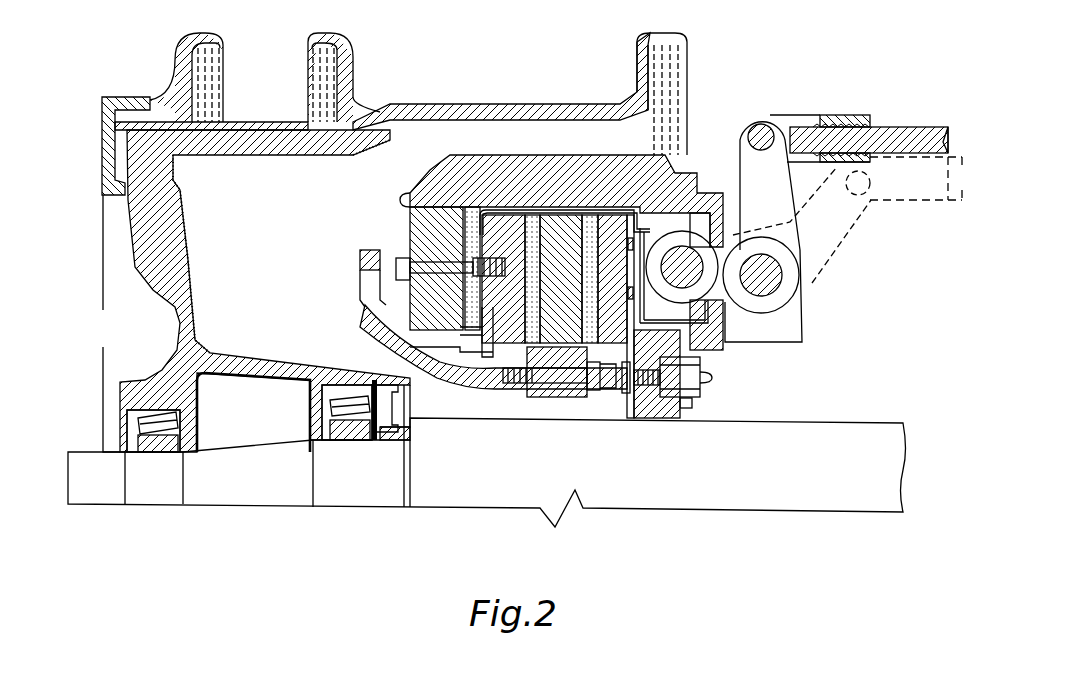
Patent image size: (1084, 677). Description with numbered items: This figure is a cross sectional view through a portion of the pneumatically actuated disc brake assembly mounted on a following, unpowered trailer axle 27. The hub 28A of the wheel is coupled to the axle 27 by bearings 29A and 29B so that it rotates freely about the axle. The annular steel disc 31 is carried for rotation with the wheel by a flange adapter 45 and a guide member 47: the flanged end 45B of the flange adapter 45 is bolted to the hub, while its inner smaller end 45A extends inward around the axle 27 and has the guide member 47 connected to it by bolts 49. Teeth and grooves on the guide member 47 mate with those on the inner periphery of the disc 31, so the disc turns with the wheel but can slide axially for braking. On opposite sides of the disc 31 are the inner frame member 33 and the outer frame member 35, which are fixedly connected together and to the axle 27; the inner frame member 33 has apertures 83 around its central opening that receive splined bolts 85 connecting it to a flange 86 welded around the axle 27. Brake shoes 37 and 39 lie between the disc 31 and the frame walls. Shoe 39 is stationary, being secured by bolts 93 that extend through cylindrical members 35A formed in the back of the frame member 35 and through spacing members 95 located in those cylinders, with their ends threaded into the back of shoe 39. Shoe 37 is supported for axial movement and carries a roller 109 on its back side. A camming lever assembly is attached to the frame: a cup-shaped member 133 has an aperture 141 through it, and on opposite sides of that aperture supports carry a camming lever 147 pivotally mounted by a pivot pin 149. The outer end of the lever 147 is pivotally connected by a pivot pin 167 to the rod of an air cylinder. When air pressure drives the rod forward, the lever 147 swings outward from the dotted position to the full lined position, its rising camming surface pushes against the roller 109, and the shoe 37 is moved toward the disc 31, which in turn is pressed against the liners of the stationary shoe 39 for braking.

The axle 27 is at (813, 433).
The hub 28A is at (137, 302).
The bearing 29A is at (150, 447).
The bearing 29B is at (345, 439).
The cylindrical member 35A is at (404, 194).
The bolt 93 is at (396, 263).
The flanged end 45B is at (365, 303).
The flange adapter 45 is at (425, 385).
The inner smaller end 45A is at (495, 389).
The spacing member 95 is at (447, 210).
The outer frame member 35 is at (475, 160).
The brake shoe 39 is at (508, 217).
The disc 31 is at (548, 220).
The inner frame member 33 is at (595, 163).
The brake shoe 37 is at (620, 210).
The roller 109 is at (692, 235).
The cup-shaped member 133 is at (710, 228).
The pivot pin 167 is at (763, 130).
The camming lever 147 is at (770, 183).
The aperture 141 is at (733, 235).
The pivot pin 149 is at (763, 287).
The splined bolt 85 is at (712, 377).
The flange 86 is at (693, 408).
The bolt 49 is at (540, 385).
The guide member 47 is at (575, 390).
The aperture 83 is at (647, 400).